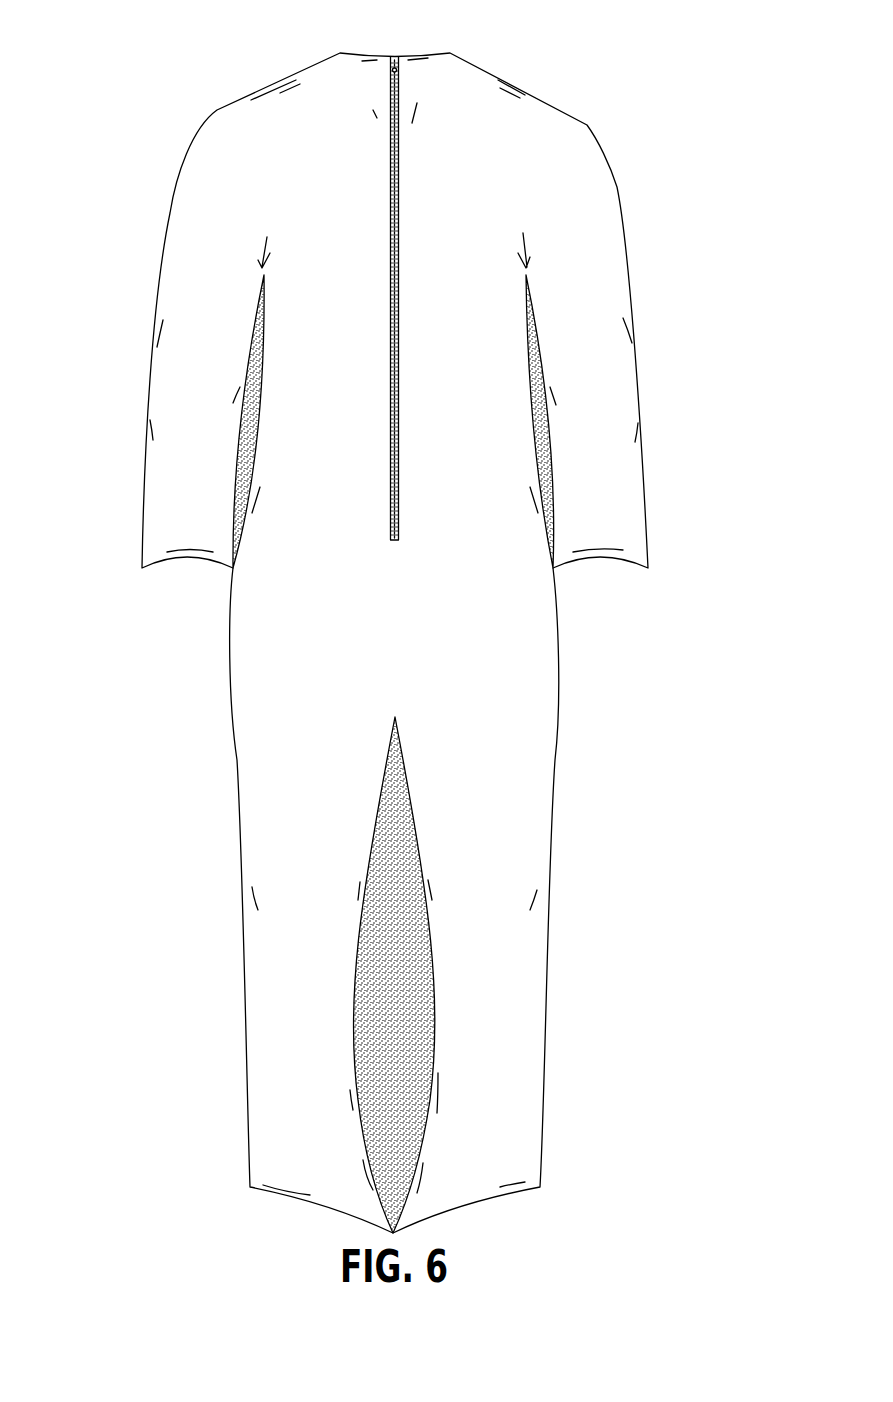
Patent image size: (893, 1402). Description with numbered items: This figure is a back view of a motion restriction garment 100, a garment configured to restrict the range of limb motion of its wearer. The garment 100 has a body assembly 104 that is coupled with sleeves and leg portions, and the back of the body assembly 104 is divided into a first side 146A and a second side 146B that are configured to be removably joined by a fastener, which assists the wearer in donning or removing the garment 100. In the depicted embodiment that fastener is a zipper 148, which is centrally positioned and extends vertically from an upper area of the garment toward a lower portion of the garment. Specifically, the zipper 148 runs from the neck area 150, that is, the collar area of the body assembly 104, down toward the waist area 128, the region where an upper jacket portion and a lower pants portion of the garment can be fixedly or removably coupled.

The motion restriction garment 100 is at (400, 616).
The body assembly 104 is at (479, 733).
The waist 128 is at (482, 571).
The first side 146A is at (308, 245).
The second side 146B is at (482, 245).
The zipper 148 is at (400, 208).
The neck area 150 is at (401, 33).